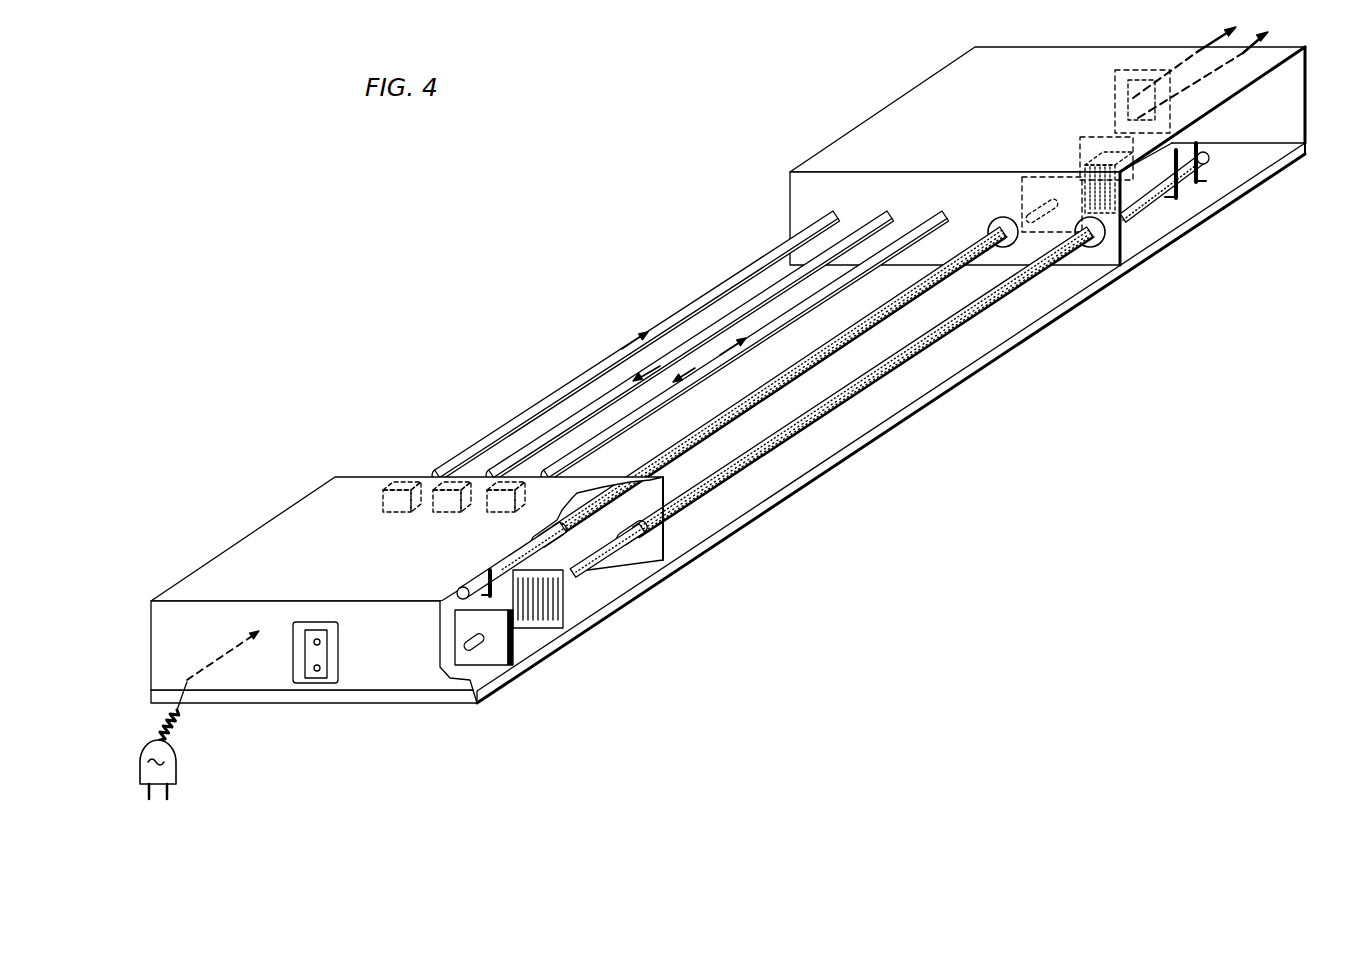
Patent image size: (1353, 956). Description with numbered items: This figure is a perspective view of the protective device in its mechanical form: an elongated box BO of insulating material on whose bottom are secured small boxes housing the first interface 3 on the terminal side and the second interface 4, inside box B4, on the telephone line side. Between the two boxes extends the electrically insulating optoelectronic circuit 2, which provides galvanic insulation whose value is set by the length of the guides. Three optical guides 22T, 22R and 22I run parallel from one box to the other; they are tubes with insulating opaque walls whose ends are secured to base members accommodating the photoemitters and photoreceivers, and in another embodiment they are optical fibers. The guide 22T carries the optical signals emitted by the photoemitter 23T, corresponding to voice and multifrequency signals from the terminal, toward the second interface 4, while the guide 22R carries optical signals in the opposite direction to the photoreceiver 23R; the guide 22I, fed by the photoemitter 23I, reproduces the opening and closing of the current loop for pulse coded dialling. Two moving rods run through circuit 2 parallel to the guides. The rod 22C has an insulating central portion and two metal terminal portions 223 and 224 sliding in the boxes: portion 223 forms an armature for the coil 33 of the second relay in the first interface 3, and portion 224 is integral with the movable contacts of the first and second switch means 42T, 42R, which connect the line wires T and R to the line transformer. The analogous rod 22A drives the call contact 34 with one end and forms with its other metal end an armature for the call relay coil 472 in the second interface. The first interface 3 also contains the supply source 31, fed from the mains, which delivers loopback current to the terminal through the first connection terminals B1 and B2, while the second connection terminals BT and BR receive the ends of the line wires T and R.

The electrically insulating optoelectronic circuit 2 is at (762, 374).
The first interface 3 is at (401, 637).
The second interface 4 is at (1051, 135).
The optical guide 22T is at (640, 338).
The optical guide 22R is at (696, 337).
The optical guide 22I is at (742, 342).
The second moving rod 22A is at (900, 302).
The moving insulating rod 22C is at (919, 345).
The photoemitter 23T is at (375, 512).
The photoreceiver 23R is at (447, 510).
The photoemitter 23I is at (500, 510).
The supply source 31 is at (220, 656).
The coil of second relay 33 is at (530, 630).
The call contact 34 is at (473, 579).
The metal terminal portion 223 is at (573, 575).
The metal terminal portion 224 is at (1210, 155).
The first switch means 42T is at (1177, 198).
The second switch means 42R is at (1197, 182).
The relay coil 472 is at (1083, 150).
The first connection terminal B1 is at (317, 642).
The first connection terminal B2 is at (317, 668).
The small box B4 is at (880, 112).
The second connection terminal BT is at (1116, 88).
The second connection terminal BR is at (1116, 126).
The insulating material box BO is at (985, 358).
The telephone line wire T is at (1212, 35).
The telephone line wire R is at (1270, 36).